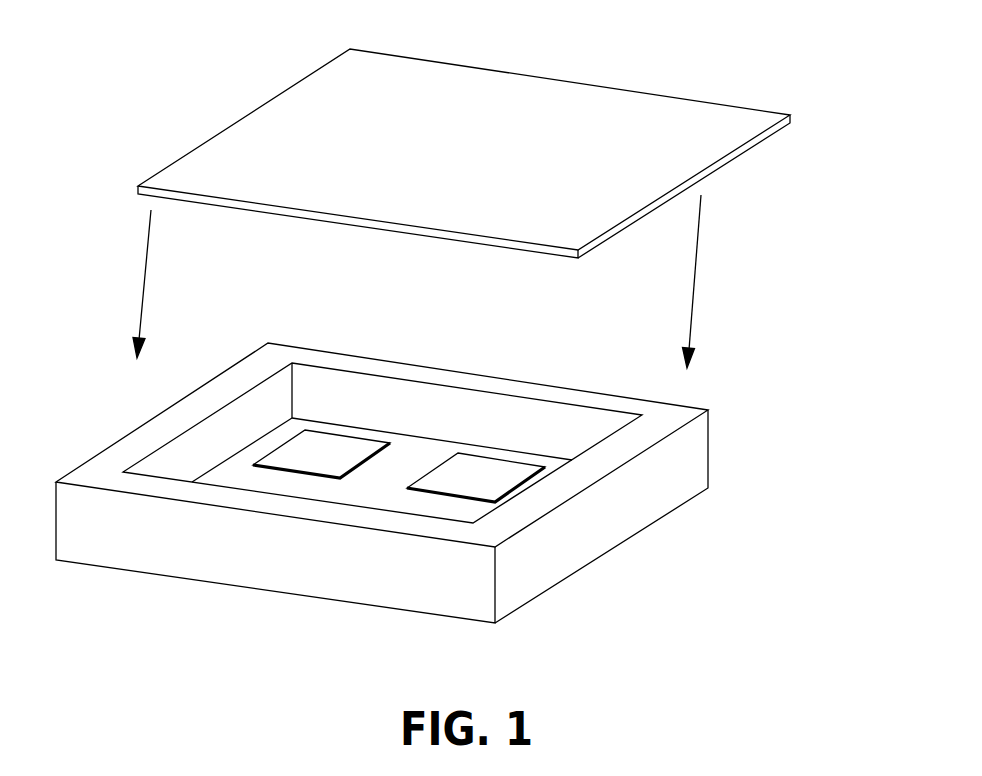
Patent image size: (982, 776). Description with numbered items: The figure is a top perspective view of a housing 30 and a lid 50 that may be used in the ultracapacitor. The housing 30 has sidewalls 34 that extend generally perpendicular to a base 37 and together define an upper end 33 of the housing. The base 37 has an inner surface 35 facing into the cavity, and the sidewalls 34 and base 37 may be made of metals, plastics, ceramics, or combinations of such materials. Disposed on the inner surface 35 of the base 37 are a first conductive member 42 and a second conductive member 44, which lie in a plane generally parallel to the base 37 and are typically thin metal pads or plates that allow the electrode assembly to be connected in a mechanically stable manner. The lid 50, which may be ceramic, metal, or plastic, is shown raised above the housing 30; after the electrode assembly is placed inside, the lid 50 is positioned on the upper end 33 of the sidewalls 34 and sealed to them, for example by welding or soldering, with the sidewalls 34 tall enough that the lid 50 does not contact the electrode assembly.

The housing 30 is at (390, 484).
The upper end 33 is at (437, 377).
The sidewalls 34 is at (193, 562).
The inner surface 35 is at (223, 475).
The base 37 is at (367, 493).
The first conductive member 42 is at (317, 453).
The second conductive member 44 is at (495, 473).
The lid 50 is at (729, 106).